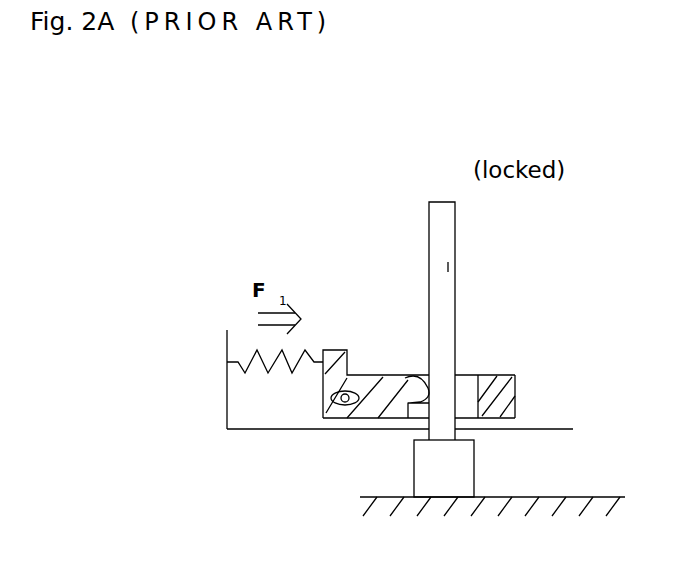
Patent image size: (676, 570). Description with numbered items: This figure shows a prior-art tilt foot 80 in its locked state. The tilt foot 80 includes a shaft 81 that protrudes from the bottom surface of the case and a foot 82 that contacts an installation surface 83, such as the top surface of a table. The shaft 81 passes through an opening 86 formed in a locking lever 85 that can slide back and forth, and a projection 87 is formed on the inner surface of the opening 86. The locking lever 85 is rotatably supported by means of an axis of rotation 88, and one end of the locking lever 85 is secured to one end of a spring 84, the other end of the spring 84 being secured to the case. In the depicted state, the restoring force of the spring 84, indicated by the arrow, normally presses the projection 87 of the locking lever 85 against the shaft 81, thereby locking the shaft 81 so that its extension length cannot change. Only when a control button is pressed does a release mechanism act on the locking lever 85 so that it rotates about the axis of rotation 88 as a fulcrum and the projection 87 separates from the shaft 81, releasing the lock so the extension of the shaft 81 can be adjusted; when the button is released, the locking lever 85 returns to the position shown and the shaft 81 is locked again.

The tilt foot 80 is at (455, 222).
The shaft 81 is at (448, 267).
The foot 82 is at (474, 461).
The installation surface 83 is at (600, 496).
The spring 84 is at (270, 387).
The locking lever 85 is at (378, 418).
The opening 86 is at (467, 387).
The projection 87 is at (420, 375).
The axis of rotation 88 is at (342, 410).